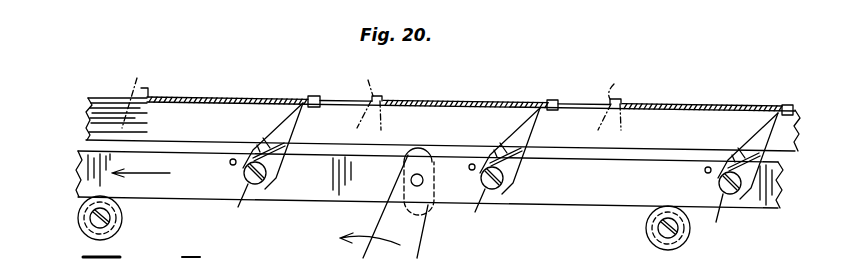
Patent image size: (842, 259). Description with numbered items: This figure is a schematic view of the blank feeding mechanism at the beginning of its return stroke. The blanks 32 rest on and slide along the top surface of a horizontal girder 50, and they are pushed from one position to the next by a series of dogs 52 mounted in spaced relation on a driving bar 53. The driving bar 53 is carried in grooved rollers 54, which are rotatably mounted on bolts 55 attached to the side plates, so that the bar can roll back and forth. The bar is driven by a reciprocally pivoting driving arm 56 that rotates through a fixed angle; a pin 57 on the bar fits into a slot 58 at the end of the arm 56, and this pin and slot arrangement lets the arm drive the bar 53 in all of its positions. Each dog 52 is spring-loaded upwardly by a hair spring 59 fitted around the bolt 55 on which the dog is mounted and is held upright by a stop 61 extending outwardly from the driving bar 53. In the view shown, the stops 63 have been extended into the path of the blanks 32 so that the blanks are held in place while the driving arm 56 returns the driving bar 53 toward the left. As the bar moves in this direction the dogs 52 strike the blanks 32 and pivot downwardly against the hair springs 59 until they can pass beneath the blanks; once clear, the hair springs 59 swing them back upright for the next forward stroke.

The blank 32 is at (210, 97).
The horizontal girder 50 is at (86, 114).
The dog 52 is at (752, 122).
The driving bar 53 is at (77, 166).
The grooved roller 54 is at (78, 219).
The bolt 55 is at (484, 213).
The driving arm 56 is at (428, 237).
The pin 57 is at (411, 180).
The slot 58 is at (437, 156).
The hair spring 59 is at (279, 160).
The stop 61 is at (230, 165).
The stop 63 is at (316, 96).